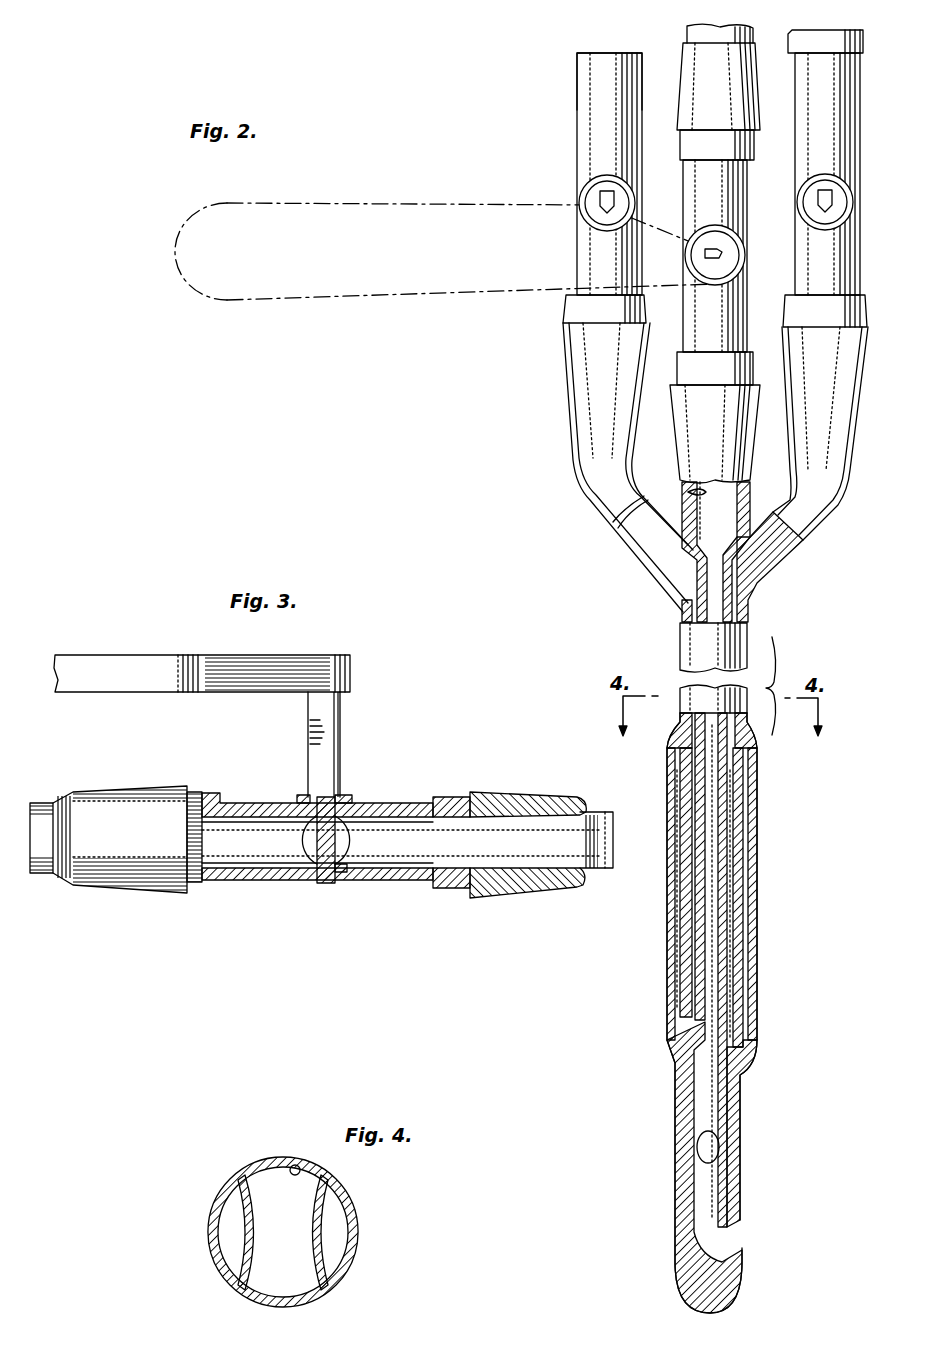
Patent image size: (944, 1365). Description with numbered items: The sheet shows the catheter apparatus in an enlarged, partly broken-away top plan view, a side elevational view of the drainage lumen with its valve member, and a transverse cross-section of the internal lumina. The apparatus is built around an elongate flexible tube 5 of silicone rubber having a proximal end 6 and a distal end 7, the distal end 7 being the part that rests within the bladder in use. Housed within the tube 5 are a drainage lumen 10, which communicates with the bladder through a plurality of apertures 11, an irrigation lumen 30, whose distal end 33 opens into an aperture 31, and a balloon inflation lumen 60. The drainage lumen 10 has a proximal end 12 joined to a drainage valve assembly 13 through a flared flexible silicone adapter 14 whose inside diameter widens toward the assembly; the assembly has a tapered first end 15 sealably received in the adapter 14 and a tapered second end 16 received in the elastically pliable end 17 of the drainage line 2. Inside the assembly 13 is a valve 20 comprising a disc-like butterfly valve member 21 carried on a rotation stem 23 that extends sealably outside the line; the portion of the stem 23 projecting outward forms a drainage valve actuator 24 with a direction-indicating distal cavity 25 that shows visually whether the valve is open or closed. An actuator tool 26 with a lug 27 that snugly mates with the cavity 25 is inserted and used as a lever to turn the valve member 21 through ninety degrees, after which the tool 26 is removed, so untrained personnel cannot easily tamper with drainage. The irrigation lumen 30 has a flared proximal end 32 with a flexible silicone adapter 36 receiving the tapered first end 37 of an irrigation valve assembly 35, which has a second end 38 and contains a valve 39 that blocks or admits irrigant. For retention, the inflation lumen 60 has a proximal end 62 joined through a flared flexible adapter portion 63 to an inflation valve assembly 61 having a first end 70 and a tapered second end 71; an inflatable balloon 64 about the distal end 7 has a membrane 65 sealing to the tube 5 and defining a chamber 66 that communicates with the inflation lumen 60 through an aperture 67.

In FIG. 2, the drainage line 2 is at (740, 42).
In FIG. 3, the drainage line 2 is at (46, 803).
In FIG. 2, the elongate flexible tube 5 is at (757, 840).
In FIG. 4, the elongate flexible tube 5 is at (356, 1210).
In FIG. 2, the proximal end 6 is at (680, 604).
In FIG. 2, the distal end 7 is at (690, 1300).
In FIG. 2, the drainage lumen 10 is at (716, 940).
In FIG. 4, the drainage lumen 10 is at (294, 1165).
In FIG. 2, the apertures 11 is at (714, 1160).
In FIG. 2, the proximal end 12 is at (688, 493).
In FIG. 3, the proximal end 12 is at (606, 860).
In FIG. 2, the drainage valve assembly 13 is at (748, 300).
In FIG. 3, the drainage valve assembly 13 is at (330, 885).
In FIG. 2, the flared flexible silicone adapter 14 is at (752, 445).
In FIG. 3, the flared flexible silicone adapter 14 is at (527, 890).
In FIG. 2, the first end 15 is at (677, 365).
In FIG. 3, the first end 15 is at (450, 888).
In FIG. 2, the second end 16 is at (682, 150).
In FIG. 3, the second end 16 is at (210, 884).
In FIG. 2, the elastically pliable end 17 is at (685, 97).
In FIG. 3, the elastically pliable end 17 is at (135, 892).
In FIG. 3, the valve 20 is at (345, 870).
In FIG. 3, the butterfly valve member 21 is at (312, 866).
In FIG. 3, the rotation axle or stem 23 is at (338, 842).
In FIG. 3, the drainage valve actuator 24 is at (352, 795).
In FIG. 2, the distal cavity 25 is at (715, 252).
In FIG. 3, the distal cavity 25 is at (310, 797).
In FIG. 2, the actuator tool 26 is at (318, 300).
In FIG. 3, the actuator tool 26 is at (352, 672).
In FIG. 3, the lug 27 is at (340, 716).
In FIG. 2, the irrigation lumen 30 is at (735, 795).
In FIG. 4, the irrigation lumen 30 is at (340, 1244).
In FIG. 2, the aperture 31 is at (735, 1110).
In FIG. 2, the proximal end 32 is at (770, 575).
In FIG. 2, the distal end 33 is at (720, 1035).
In FIG. 2, the irrigation valve assembly 35 is at (860, 265).
In FIG. 2, the flexible silicone adapter 36 is at (866, 370).
In FIG. 2, the first end 37 is at (866, 320).
In FIG. 2, the second end 38 is at (848, 55).
In FIG. 2, the valve 39 is at (845, 201).
In FIG. 2, the balloon inflation lumen 60 is at (700, 950).
In FIG. 4, the balloon inflation lumen 60 is at (222, 1236).
In FIG. 2, the inflation valve assembly 61 is at (577, 128).
In FIG. 2, the proximal end 62 is at (655, 560).
In FIG. 2, the flared flexible adapter portion 63 is at (572, 417).
In FIG. 2, the inflatable balloon 64 is at (668, 978).
In FIG. 2, the membrane 65 is at (757, 965).
In FIG. 2, the chamber 66 is at (688, 760).
In FIG. 2, the aperture 67 is at (685, 998).
In FIG. 2, the first end 70 is at (567, 316).
In FIG. 2, the second end 71 is at (578, 80).